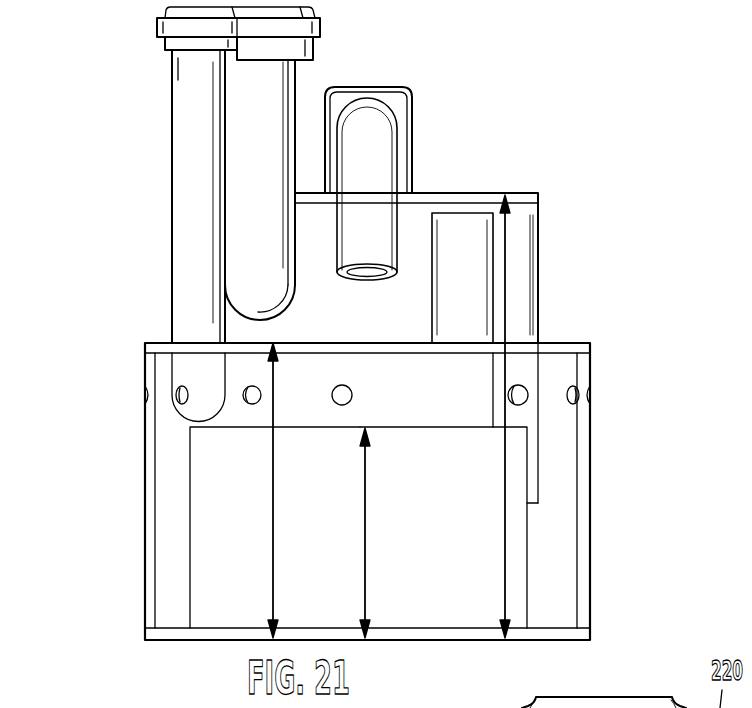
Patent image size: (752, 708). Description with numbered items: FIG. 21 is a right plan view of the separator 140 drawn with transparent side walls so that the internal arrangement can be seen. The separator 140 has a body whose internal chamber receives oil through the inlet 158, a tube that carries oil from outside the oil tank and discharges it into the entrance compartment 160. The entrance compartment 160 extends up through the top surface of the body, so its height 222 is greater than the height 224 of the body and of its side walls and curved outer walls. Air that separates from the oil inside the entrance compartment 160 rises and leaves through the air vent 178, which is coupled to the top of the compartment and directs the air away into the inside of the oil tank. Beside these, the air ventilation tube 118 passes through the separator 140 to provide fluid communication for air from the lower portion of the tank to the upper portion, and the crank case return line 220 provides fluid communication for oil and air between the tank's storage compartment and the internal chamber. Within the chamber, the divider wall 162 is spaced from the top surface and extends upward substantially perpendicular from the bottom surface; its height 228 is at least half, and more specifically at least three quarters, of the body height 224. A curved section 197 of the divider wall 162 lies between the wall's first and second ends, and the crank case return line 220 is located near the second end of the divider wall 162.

The separator 140 is at (684, 152).
The crank case return line 220 is at (182, 123).
The inlet 158 is at (283, 86).
The air vent 178 is at (372, 118).
The entrance compartment 160 is at (417, 223).
The air ventilation tube 118 is at (463, 233).
The height of entrance compartment 222 is at (505, 278).
The divider wall 162 is at (518, 553).
The curved section 197 is at (232, 578).
The height of body 224 is at (275, 515).
The height of divider wall 228 is at (365, 554).